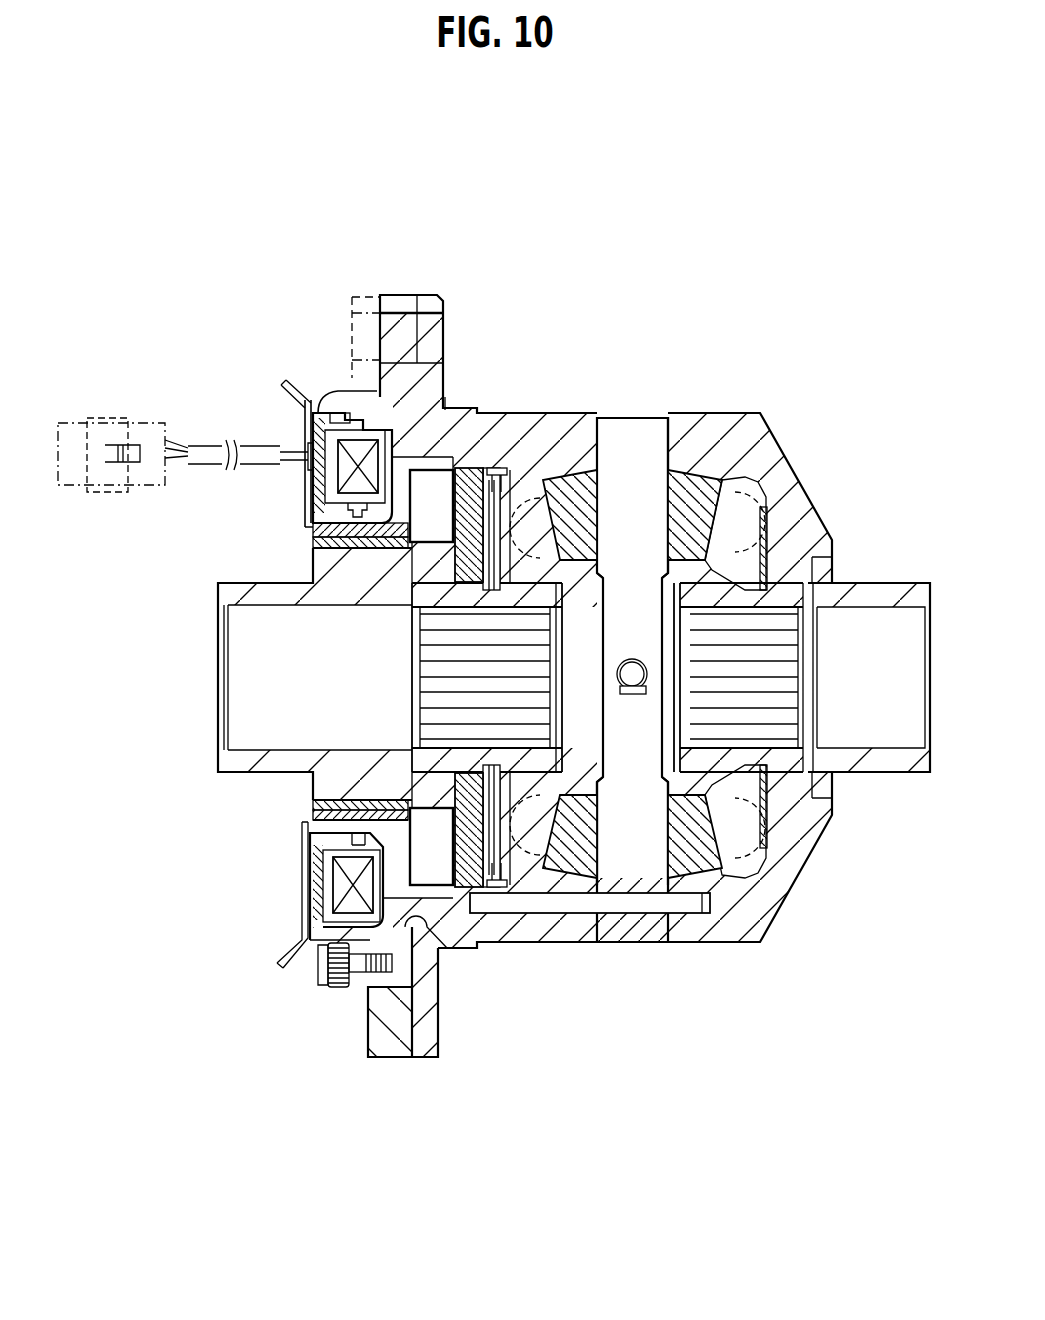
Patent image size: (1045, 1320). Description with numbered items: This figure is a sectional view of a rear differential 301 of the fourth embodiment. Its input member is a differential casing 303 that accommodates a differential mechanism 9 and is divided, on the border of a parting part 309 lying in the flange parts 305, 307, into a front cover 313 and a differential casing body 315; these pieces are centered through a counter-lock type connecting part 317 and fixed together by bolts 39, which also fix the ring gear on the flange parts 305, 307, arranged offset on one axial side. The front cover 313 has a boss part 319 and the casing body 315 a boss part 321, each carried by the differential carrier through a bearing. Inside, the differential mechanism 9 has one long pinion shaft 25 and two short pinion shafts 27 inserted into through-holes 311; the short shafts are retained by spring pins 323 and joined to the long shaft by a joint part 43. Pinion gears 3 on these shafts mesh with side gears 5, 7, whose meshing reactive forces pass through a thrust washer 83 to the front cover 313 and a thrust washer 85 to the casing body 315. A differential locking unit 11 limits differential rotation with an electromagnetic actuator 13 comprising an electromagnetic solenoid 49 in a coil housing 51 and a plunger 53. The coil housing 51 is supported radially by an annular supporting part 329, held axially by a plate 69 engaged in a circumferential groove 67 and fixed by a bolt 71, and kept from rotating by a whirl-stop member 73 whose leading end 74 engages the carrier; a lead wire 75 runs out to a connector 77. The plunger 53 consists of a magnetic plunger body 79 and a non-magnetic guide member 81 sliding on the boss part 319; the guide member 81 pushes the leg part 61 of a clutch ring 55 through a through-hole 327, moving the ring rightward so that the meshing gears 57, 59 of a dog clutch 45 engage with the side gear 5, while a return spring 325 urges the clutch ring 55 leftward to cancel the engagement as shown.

The rear differential 301 is at (814, 218).
The differential casing 303 is at (516, 272).
The flange part 305 is at (394, 298).
The flange part 307 is at (427, 299).
The parting part 309 is at (410, 1070).
The through-hole 311 is at (602, 420).
The front cover 313 is at (346, 380).
The differential casing body 315 is at (713, 405).
The counter-lock type connecting part 317 is at (445, 948).
The boss part 319 is at (232, 772).
The boss part 321 is at (897, 776).
The spring pin 323 is at (608, 915).
The return spring 325 is at (496, 466).
The through-hole 327 is at (425, 435).
The annular supporting part 329 is at (316, 374).
The pinion gear 3 is at (592, 506).
The side gear 5 is at (560, 578).
The side gear 7 is at (700, 572).
The differential mechanism 9 is at (556, 1000).
The differential locking unit 11 is at (222, 290).
The electromagnetic actuator 13 is at (330, 378).
The long pinion shaft 25 is at (622, 584).
The short pinion shaft 27 is at (622, 786).
The bolt 39 is at (345, 285).
The joint part 43 is at (668, 683).
The dog clutch 45 is at (483, 605).
The electromagnetic solenoid 49 is at (333, 862).
The coil housing 51 is at (352, 878).
The plunger 53 is at (238, 537).
The clutch ring 55 is at (470, 458).
The meshing gear 57 is at (430, 602).
The meshing gear 59 is at (512, 572).
The leg part 61 is at (418, 521).
The circumferential groove 67 is at (310, 968).
The plate 69 is at (353, 975).
The bolt 71 is at (334, 972).
The whirl-stop member 73 is at (290, 915).
The leading end 74 is at (280, 962).
The lead wire 75 is at (197, 440).
The connector 77 is at (105, 420).
The plunger body 79 is at (314, 525).
The guide member 81 is at (315, 542).
The thrust washer 83 is at (412, 607).
The thrust washer 85 is at (770, 600).